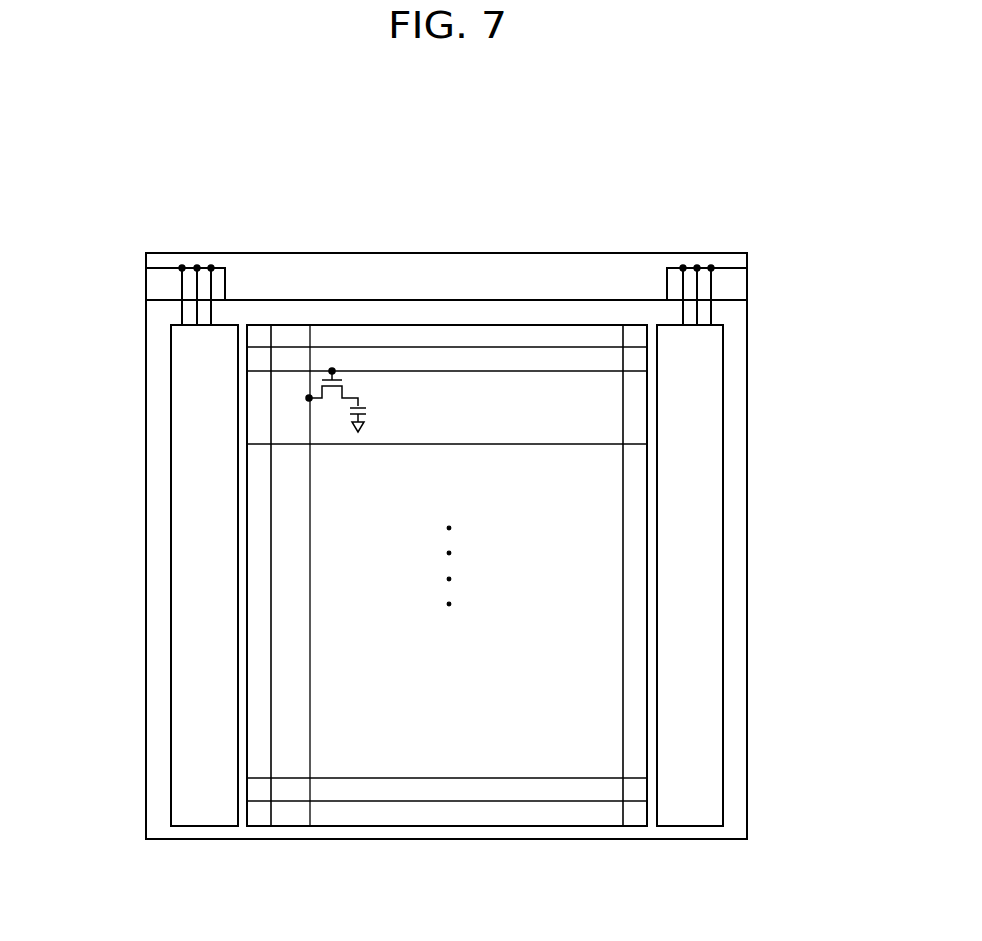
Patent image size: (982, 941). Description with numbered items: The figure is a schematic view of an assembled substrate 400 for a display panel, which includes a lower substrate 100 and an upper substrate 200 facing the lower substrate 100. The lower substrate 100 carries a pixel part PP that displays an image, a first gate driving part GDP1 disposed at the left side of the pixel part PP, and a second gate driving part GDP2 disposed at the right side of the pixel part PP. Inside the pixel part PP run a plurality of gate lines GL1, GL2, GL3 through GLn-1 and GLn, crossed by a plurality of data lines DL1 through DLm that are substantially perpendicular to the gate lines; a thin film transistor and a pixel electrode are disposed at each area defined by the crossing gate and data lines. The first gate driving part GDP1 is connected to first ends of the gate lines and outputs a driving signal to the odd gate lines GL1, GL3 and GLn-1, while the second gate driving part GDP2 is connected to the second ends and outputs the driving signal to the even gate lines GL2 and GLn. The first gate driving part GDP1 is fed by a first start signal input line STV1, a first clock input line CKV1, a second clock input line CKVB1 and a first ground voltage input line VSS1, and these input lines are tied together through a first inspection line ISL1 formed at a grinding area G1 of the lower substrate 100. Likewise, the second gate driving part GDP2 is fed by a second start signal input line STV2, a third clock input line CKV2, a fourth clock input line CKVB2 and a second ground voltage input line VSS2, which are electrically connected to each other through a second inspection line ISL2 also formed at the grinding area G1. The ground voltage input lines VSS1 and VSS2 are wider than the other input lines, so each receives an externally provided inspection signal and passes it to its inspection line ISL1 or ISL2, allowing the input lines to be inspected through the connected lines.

The assembled substrate 400 is at (441, 161).
The lower substrate 100 is at (538, 252).
The upper substrate 200 is at (467, 298).
The grinding area G1 is at (390, 262).
The first inspection line ISL1 is at (163, 268).
The second inspection line ISL2 is at (730, 267).
The first start signal input line STV1 is at (226, 290).
The second start signal input line STV2 is at (667, 290).
The second clock input line CKVB1 is at (180, 282).
The first clock input line CKV1 is at (197, 296).
The first ground voltage input line VSS1 is at (212, 310).
The fourth clock input line CKVB2 is at (712, 280).
The third clock input line CKV2 is at (697, 297).
The second ground voltage input line VSS2 is at (683, 310).
The first gate driving part GDP1 is at (171, 498).
The second gate driving part GDP2 is at (724, 533).
The pixel part PP is at (510, 840).
The first data line DL1 is at (272, 548).
The m-th data line DLm is at (623, 548).
The first gate line GL1 is at (483, 350).
The second gate line GL2 is at (550, 373).
The third gate line GL3 is at (553, 446).
The (n-1)-th gate line GLn-1 is at (555, 777).
The n-th gate line GLn is at (455, 800).